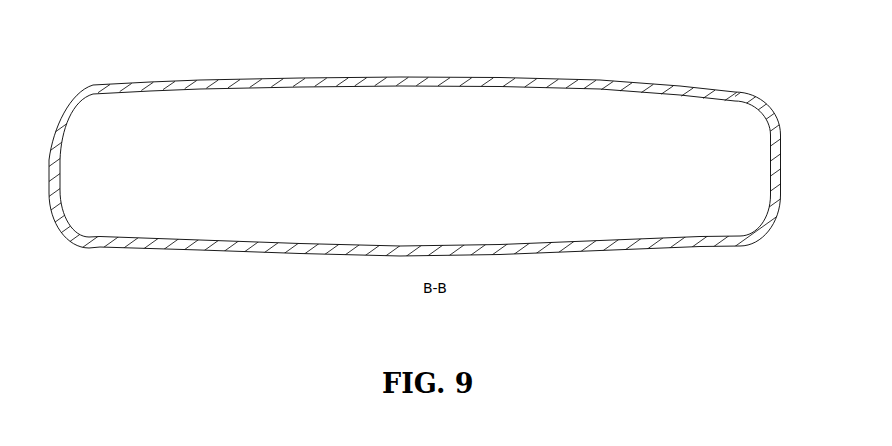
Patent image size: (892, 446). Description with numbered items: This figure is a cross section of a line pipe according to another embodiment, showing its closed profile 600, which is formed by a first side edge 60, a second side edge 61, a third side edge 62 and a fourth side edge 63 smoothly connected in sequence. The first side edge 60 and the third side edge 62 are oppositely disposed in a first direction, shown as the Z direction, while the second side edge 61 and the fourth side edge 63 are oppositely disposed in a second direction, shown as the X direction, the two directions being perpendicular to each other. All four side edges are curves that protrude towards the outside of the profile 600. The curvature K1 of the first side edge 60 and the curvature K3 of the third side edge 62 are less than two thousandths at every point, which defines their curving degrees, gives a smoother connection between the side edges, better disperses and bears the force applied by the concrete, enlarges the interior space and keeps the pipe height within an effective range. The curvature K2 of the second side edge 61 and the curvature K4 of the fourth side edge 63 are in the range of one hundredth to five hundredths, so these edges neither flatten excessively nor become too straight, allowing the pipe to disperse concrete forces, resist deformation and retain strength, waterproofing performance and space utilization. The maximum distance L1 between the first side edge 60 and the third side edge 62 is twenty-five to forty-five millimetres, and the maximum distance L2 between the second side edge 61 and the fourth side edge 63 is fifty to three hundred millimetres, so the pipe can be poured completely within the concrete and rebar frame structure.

The closed profile 600 is at (446, 160).
The first side edge 60 is at (337, 77).
The second side edge 61 is at (773, 156).
The third side edge 62 is at (457, 250).
The fourth side edge 63 is at (57, 125).
The curvature of the first side edge K1 is at (597, 84).
The curvature of the second side edge K2 is at (777, 190).
The curvature of the third side edge K3 is at (222, 163).
The curvature of the fourth side edge K4 is at (127, 173).
The first direction Z is at (297, 118).
The second direction X is at (538, 178).
The distance between the first side edge and the third side edge L1 is at (372, 75).
The distance between the second side edge and the fourth side edge L2 is at (782, 170).